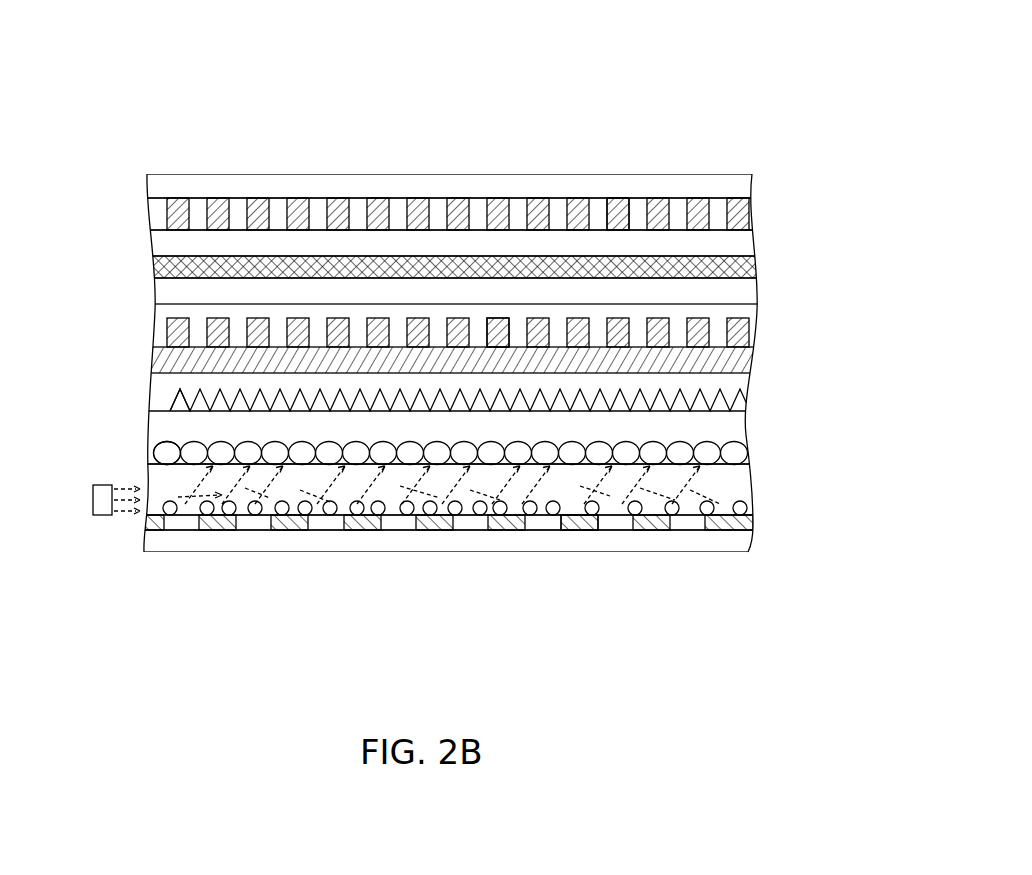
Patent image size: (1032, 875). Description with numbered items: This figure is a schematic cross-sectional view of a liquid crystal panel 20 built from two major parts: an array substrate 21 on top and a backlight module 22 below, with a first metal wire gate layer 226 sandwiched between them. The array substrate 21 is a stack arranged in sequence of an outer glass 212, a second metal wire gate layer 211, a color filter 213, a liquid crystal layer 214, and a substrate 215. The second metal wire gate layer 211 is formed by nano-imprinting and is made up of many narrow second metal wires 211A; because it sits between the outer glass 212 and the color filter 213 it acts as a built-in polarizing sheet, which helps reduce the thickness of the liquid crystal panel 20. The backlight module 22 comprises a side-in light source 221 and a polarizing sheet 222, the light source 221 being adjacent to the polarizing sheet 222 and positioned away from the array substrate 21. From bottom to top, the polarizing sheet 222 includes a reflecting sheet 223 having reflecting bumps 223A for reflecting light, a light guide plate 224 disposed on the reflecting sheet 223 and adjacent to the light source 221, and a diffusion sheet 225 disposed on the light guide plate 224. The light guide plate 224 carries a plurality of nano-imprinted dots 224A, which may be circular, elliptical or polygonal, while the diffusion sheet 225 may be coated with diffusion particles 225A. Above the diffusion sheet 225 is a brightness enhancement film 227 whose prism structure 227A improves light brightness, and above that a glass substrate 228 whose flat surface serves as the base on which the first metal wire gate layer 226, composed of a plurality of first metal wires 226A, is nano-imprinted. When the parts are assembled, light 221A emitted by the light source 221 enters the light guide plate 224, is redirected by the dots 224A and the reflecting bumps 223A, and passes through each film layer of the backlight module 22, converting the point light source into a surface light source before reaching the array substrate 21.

The liquid crystal panel 20 is at (206, 106).
The array substrate 21 is at (846, 165).
The backlight module 22 is at (89, 529).
The second metal wire gate layer 211 is at (748, 214).
The second metal wires 211A is at (612, 200).
The outer glass 212 is at (735, 184).
The color filter 213 is at (740, 248).
The liquid crystal layer 214 is at (752, 267).
The substrate 215 is at (745, 290).
The light source 221 is at (93, 497).
The light 221A is at (135, 510).
The polarizing sheet 222 is at (858, 363).
The reflecting sheet 223 is at (778, 517).
The reflecting bumps 223A is at (570, 520).
The light guide plate 224 is at (737, 476).
The dots 224A is at (453, 508).
The diffusion sheet 225 is at (742, 430).
The diffusion particles 225A is at (150, 445).
The first metal wire gate layer 226 is at (748, 325).
The first metal wires 226A is at (497, 318).
The brightness enhancement film 227 is at (740, 382).
The prism structure 227A is at (187, 410).
The glass substrate 228 is at (742, 362).